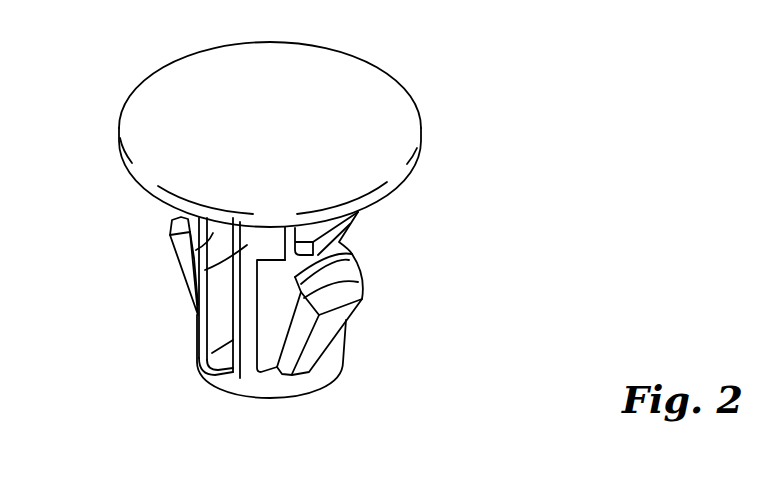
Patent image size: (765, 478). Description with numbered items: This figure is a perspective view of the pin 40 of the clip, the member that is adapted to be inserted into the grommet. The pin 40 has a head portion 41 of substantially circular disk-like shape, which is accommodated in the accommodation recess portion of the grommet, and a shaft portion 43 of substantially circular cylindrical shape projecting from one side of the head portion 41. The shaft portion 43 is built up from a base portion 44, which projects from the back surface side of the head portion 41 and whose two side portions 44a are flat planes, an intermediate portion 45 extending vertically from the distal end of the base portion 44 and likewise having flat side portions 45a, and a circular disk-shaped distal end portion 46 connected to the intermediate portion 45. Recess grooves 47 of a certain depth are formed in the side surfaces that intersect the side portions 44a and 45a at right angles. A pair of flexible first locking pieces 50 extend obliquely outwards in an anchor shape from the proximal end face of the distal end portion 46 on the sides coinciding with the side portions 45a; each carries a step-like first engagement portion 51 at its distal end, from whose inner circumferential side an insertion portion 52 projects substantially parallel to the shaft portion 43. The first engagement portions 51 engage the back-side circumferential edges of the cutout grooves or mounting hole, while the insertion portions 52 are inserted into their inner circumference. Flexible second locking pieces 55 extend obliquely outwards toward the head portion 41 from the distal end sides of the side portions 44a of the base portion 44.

The pin 40 is at (378, 57).
The head portion 41 is at (403, 125).
The shaft portion 43 is at (80, 255).
The base portion 44 is at (240, 260).
The side portion of base portion 44a is at (343, 250).
The intermediate portion 45 is at (240, 318).
The side portion of intermediate portion 45a is at (270, 332).
The distal end portion 46 is at (240, 385).
The recess groove 47 is at (180, 222).
The first locking piece 50 is at (172, 253).
The first engagement portion 51 is at (345, 296).
The insertion portion 52 is at (348, 270).
The second locking piece 55 is at (337, 243).